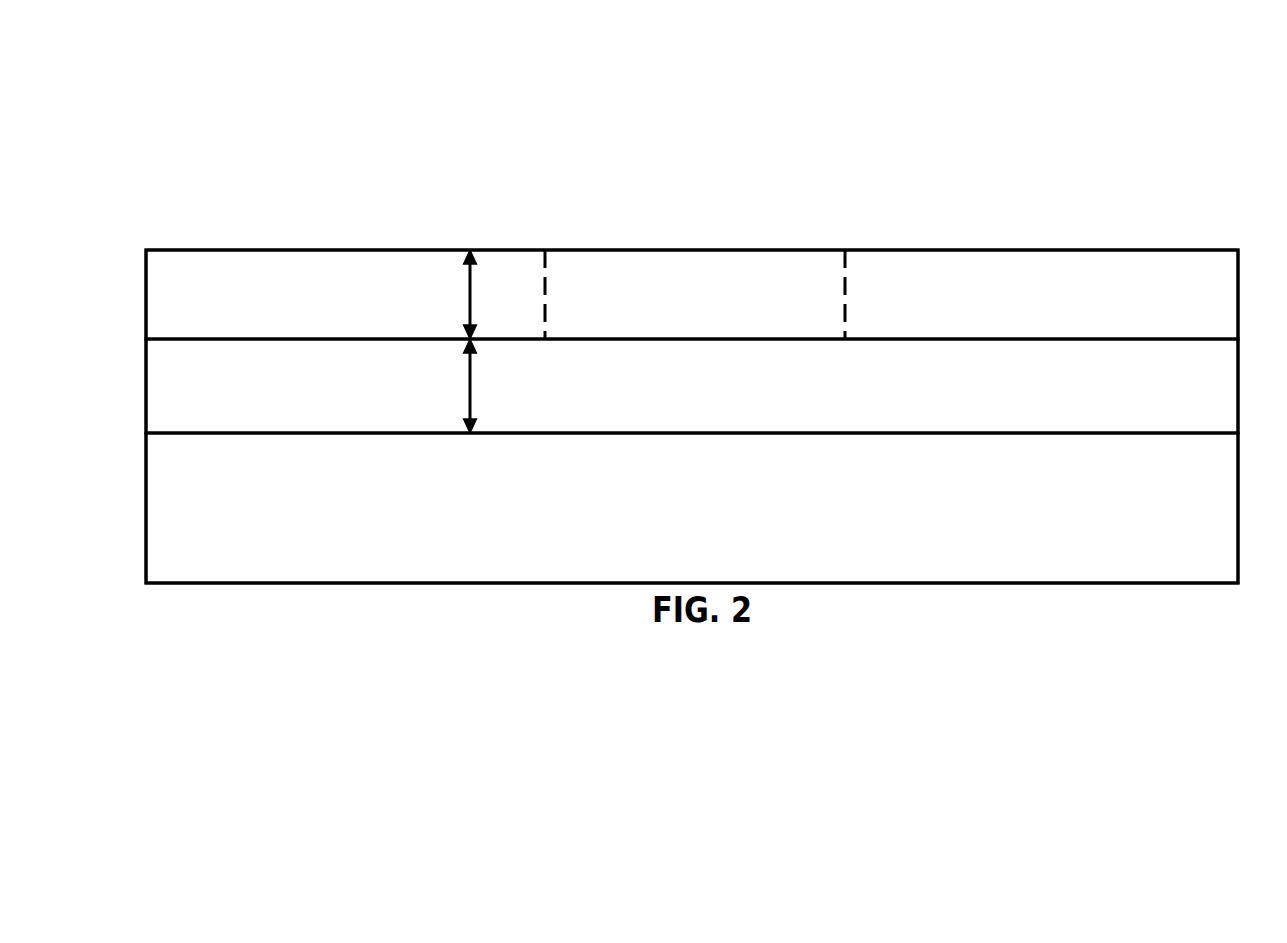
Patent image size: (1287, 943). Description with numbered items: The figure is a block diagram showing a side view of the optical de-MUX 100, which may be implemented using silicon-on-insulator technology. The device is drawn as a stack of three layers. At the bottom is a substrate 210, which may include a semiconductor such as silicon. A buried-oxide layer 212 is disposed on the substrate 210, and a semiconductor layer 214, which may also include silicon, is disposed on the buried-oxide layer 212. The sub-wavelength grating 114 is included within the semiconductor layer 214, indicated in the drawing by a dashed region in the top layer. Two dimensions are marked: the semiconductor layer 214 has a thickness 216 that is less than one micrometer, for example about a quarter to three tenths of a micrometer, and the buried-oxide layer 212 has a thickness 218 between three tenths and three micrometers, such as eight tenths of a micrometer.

The optical de-MUX 100 is at (1093, 105).
The sub-wavelength grating 114 is at (678, 329).
The substrate 210 is at (675, 531).
The buried-oxide layer 212 is at (1195, 409).
The semiconductor layer 214 is at (1195, 318).
The thickness 216 is at (468, 308).
The thickness 218 is at (468, 401).